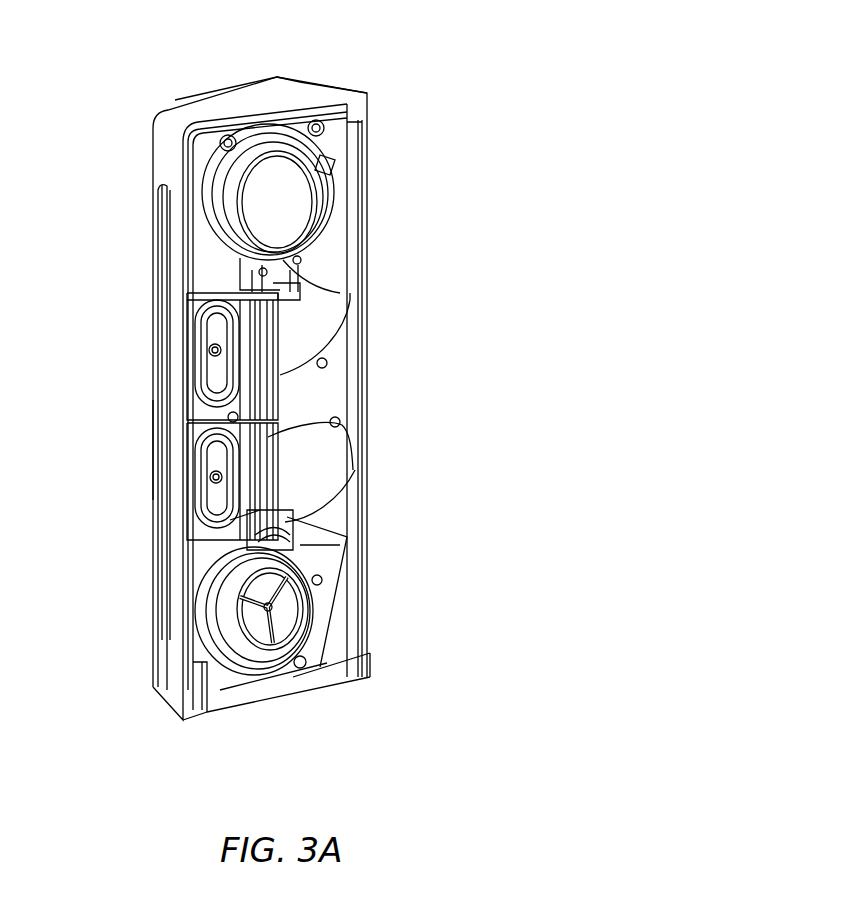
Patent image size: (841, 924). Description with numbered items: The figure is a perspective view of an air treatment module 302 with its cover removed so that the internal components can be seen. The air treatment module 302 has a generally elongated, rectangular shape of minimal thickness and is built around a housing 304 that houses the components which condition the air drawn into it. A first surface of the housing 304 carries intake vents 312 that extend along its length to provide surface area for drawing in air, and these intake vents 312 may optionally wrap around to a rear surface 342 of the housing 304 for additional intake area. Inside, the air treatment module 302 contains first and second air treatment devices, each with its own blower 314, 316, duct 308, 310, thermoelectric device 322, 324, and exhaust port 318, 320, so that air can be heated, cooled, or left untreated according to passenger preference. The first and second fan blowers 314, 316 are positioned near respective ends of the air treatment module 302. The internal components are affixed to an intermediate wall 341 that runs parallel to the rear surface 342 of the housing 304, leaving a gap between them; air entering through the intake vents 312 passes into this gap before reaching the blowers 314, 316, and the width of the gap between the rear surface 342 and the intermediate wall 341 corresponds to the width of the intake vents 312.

The air treatment module 302 is at (423, 107).
The housing 304 is at (250, 97).
The duct 308 is at (333, 303).
The duct 310 is at (333, 490).
The intake vents 312 is at (152, 330).
The blower 314 is at (283, 168).
The blower 316 is at (307, 623).
The exhaust port 318 is at (218, 378).
The exhaust port 320 is at (245, 492).
The thermoelectric device 322 is at (225, 275).
The thermoelectric device 324 is at (230, 520).
The intermediate wall 341 is at (323, 617).
The rear surface 342 is at (175, 100).